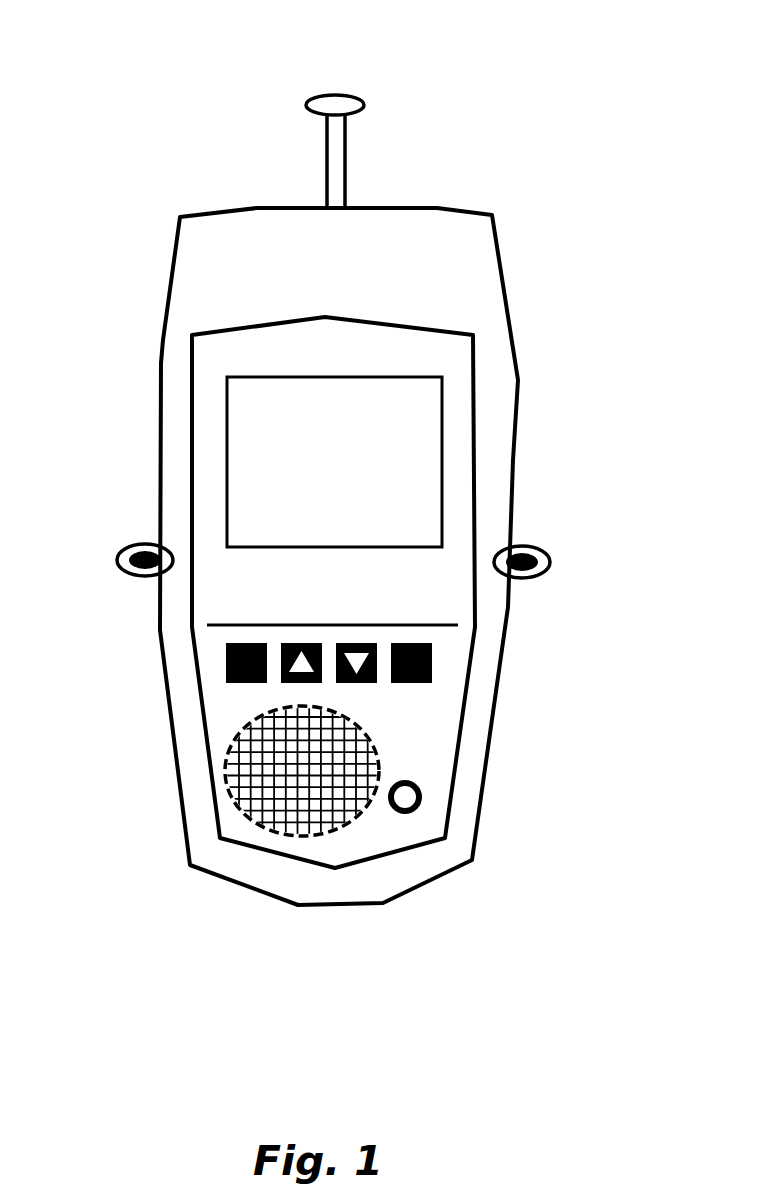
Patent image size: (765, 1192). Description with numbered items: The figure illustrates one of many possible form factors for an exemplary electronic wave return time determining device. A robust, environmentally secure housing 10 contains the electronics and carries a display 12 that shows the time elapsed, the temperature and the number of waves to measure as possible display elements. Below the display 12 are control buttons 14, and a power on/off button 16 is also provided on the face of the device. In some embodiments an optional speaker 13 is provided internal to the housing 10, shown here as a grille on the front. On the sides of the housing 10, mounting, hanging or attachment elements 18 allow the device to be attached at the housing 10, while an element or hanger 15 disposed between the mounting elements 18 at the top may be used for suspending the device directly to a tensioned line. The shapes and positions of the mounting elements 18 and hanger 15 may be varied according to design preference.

The housing 10 is at (490, 280).
The display 12 is at (240, 455).
The speaker 13 is at (257, 790).
The control buttons 14 is at (448, 662).
The hanger 15 is at (355, 127).
The power on/off button 16 is at (430, 813).
The mounting elements 18 is at (550, 567).